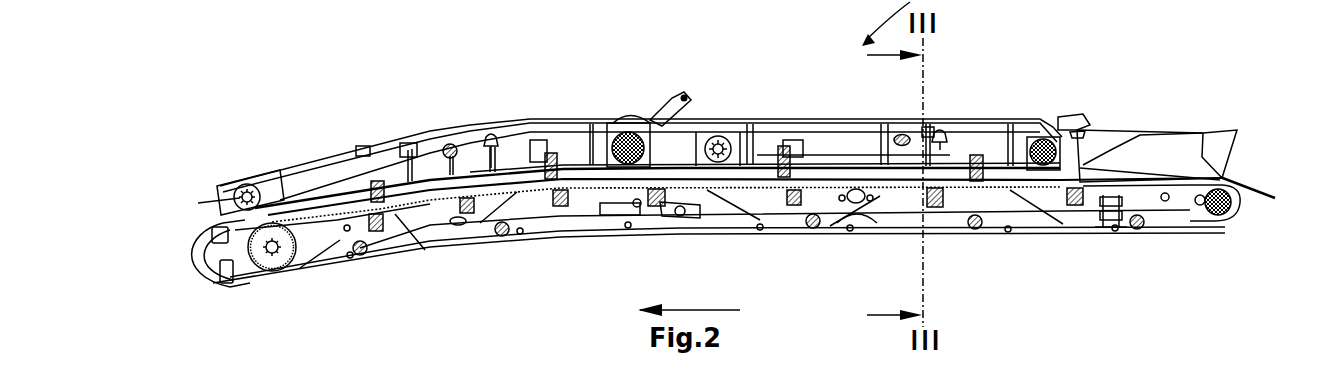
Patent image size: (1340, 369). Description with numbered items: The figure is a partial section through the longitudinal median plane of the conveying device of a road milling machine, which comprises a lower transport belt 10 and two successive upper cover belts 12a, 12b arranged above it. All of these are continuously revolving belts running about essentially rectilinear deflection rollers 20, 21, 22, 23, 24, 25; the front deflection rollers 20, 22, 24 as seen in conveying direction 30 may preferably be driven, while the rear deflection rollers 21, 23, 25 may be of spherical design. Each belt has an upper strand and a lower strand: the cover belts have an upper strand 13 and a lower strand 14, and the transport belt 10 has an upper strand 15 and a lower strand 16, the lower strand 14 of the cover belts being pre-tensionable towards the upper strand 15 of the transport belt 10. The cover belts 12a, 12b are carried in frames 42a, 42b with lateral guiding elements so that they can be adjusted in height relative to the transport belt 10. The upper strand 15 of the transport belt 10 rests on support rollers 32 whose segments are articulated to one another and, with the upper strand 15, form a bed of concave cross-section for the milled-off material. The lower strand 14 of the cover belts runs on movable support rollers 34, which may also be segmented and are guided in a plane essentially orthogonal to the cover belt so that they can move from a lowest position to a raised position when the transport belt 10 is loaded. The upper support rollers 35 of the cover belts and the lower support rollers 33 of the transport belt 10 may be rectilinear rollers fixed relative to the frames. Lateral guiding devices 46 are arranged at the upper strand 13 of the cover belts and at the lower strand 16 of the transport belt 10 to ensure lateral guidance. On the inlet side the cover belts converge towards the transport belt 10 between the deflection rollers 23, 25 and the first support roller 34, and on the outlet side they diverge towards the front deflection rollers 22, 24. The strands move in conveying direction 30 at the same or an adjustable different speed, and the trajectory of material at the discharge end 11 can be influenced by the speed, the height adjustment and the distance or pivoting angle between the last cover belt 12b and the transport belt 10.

The transport belt 10 is at (440, 253).
The discharge end 11 is at (190, 190).
The cover belt 12a is at (1040, 120).
The cover belt 12b is at (270, 153).
The upper strand 13 is at (292, 182).
The lower strand 14 is at (755, 222).
The upper strand 15 is at (1102, 182).
The lower strand 16 is at (1098, 220).
The deflection roller 20 is at (280, 270).
The deflection roller 21 is at (1240, 208).
The deflection roller 22 is at (240, 185).
The deflection roller 23 is at (603, 118).
The deflection roller 24 is at (718, 136).
The deflection roller 25 is at (1060, 128).
The conveying direction 30 is at (690, 310).
The support rollers 32 is at (1065, 200).
The lower support rollers 33 is at (1138, 229).
The support rollers 34 is at (358, 180).
The upper support rollers 35 is at (484, 132).
The frame 42a is at (932, 126).
The frame 42b is at (362, 146).
The lateral guiding devices 46 is at (452, 143).